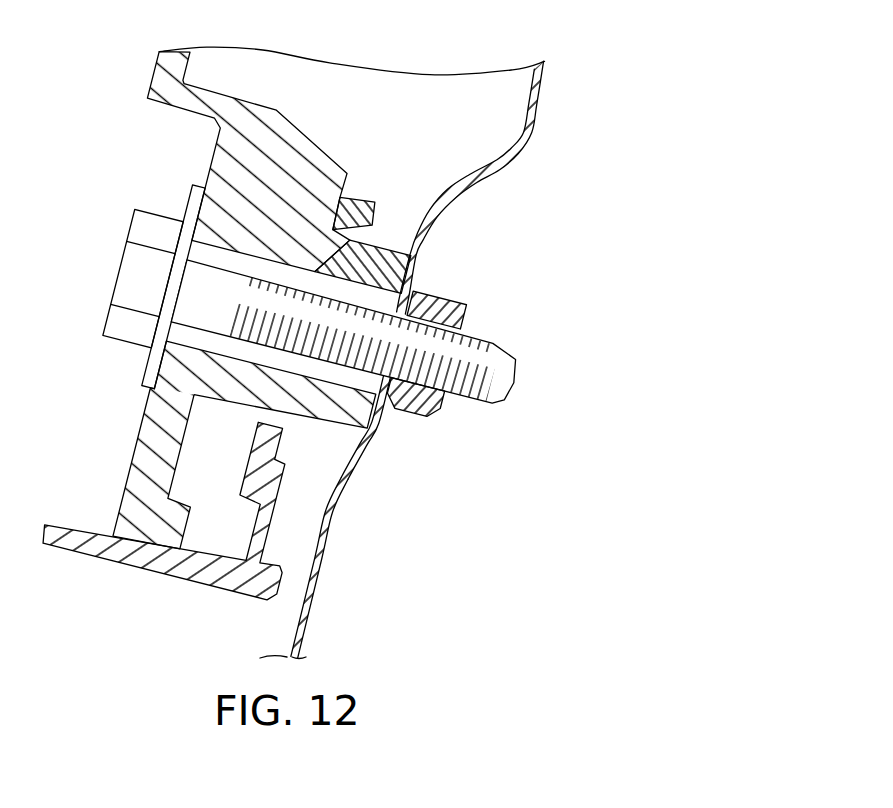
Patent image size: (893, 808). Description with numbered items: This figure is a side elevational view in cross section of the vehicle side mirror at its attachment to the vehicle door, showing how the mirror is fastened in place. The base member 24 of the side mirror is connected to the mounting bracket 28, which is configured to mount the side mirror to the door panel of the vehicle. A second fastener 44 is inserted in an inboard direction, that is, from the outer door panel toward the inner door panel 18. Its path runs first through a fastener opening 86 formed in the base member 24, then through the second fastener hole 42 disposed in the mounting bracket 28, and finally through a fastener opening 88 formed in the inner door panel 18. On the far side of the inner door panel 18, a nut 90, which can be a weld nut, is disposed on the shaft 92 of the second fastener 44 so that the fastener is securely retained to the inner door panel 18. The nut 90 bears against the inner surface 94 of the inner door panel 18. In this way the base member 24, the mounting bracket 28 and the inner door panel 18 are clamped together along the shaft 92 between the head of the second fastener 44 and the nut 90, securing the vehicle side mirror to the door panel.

The inner door panel 18 is at (533, 128).
The base member 24 is at (312, 132).
The second fastener hole 42 is at (358, 231).
The second fastener 44 is at (123, 262).
The fastener opening 86 is at (390, 278).
The fastener opening 88 is at (368, 437).
The nut 90 is at (417, 418).
The shaft 92 is at (483, 338).
The inner surface 94 is at (317, 563).
The mounting bracket 28 is at (136, 580).